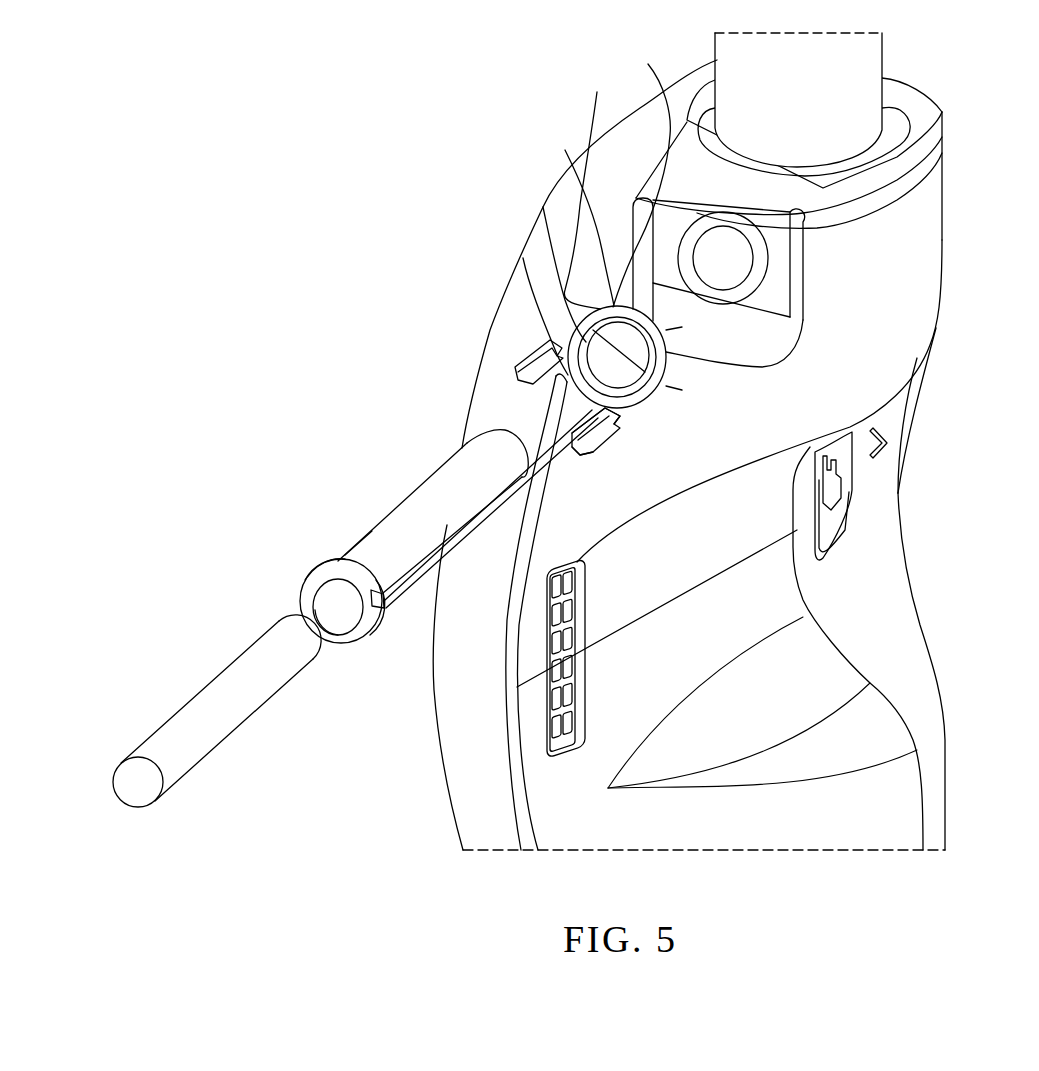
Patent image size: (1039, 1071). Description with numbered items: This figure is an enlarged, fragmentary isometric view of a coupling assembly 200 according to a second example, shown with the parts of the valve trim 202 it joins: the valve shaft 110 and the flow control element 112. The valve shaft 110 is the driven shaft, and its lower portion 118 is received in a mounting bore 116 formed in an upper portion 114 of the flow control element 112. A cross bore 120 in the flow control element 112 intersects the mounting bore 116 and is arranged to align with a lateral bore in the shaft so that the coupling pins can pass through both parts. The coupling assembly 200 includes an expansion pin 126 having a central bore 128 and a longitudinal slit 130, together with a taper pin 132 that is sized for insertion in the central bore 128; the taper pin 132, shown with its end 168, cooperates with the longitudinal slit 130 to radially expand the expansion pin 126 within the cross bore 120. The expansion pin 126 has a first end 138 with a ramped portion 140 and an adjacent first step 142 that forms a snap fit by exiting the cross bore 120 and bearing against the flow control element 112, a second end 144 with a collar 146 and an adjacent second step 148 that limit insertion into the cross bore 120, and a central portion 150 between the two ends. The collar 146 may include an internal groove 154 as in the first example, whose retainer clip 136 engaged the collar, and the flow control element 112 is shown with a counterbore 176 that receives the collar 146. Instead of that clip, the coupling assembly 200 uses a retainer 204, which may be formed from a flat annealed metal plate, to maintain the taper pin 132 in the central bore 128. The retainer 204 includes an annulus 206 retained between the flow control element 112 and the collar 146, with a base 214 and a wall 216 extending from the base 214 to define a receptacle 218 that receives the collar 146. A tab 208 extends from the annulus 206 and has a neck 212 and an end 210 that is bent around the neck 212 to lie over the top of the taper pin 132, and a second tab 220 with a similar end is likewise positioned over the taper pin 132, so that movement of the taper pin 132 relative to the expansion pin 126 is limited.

The valve shaft 110 is at (884, 52).
The flow control element 112 is at (935, 275).
The upper portion 114 is at (938, 182).
The mounting bore 116 is at (940, 118).
The lower portion 118 is at (737, 51).
The cross bore 120 is at (750, 270).
The expansion pin 126 is at (386, 521).
The central bore 128 is at (350, 617).
The longitudinal slit 130 is at (462, 545).
The taper pin 132 is at (197, 757).
The retainer clip 136 is at (598, 100).
The first end 138 is at (464, 443).
The ramped portion 140 is at (486, 433).
The first step 142 is at (530, 462).
The second end 144 is at (304, 602).
The collar 146 is at (329, 574).
The second step 148 is at (372, 616).
The central portion 150 is at (372, 540).
The internal groove 154 is at (333, 623).
The end 168 is at (153, 800).
The counterbore 176 is at (648, 67).
The coupling assembly 200 is at (217, 704).
The valve trim 202 is at (413, 512).
The retainer 204 is at (664, 388).
The annulus 206 is at (650, 395).
The tab 208 is at (600, 445).
The end 210 is at (572, 428).
The neck 212 is at (523, 260).
The base 214 is at (543, 207).
The wall 216 is at (760, 367).
The receptacle 218 is at (565, 152).
The second tab 220 is at (513, 357).